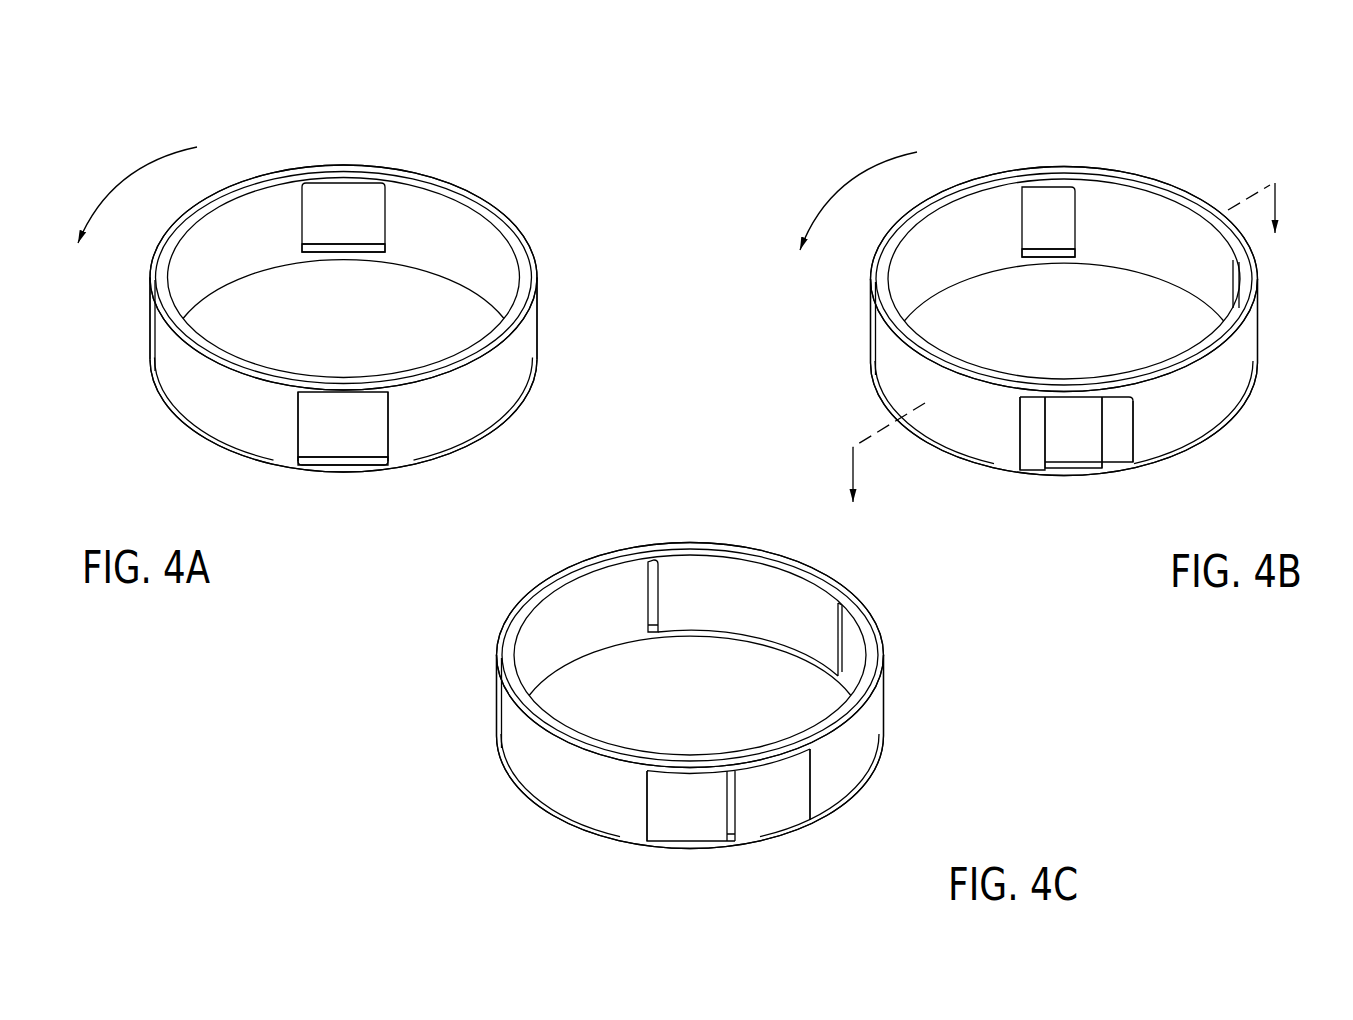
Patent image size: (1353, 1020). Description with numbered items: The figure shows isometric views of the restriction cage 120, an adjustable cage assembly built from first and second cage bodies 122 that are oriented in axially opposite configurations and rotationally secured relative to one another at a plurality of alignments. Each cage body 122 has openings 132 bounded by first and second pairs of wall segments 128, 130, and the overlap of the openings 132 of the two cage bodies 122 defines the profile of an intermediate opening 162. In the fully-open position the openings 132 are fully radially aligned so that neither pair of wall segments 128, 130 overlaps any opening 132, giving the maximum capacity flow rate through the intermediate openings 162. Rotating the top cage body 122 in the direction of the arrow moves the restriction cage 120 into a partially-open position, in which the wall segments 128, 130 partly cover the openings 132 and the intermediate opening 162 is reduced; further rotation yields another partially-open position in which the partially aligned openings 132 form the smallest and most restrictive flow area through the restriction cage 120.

In FIG. 4A, the restriction cage 120 is at (505, 190).
In FIG. 4B, the restriction cage 120 is at (1178, 177).
In FIG. 4C, the restriction cage 120 is at (727, 518).
In FIG. 4A, the cage body 122 is at (338, 163).
In FIG. 4B, the cage body 122 is at (1058, 165).
In FIG. 4C, the cage body 122 is at (700, 542).
In FIG. 4A, the first pair of wall segments 128 is at (190, 383).
In FIG. 4B, the first pair of wall segments 128 is at (892, 363).
In FIG. 4C, the first pair of wall segments 128 is at (537, 758).
In FIG. 4A, the second pair of wall segments 130 is at (203, 263).
In FIG. 4B, the second pair of wall segments 130 is at (1195, 509).
In FIG. 4C, the second pair of wall segments 130 is at (677, 815).
In FIG. 4A, the opening 132 is at (293, 435).
In FIG. 4B, the opening 132 is at (1017, 432).
In FIG. 4C, the opening 132 is at (645, 810).
In FIG. 4A, the intermediate opening 162 is at (332, 212).
In FIG. 4B, the intermediate opening 162 is at (1053, 218).
In FIG. 4C, the intermediate opening 162 is at (653, 602).